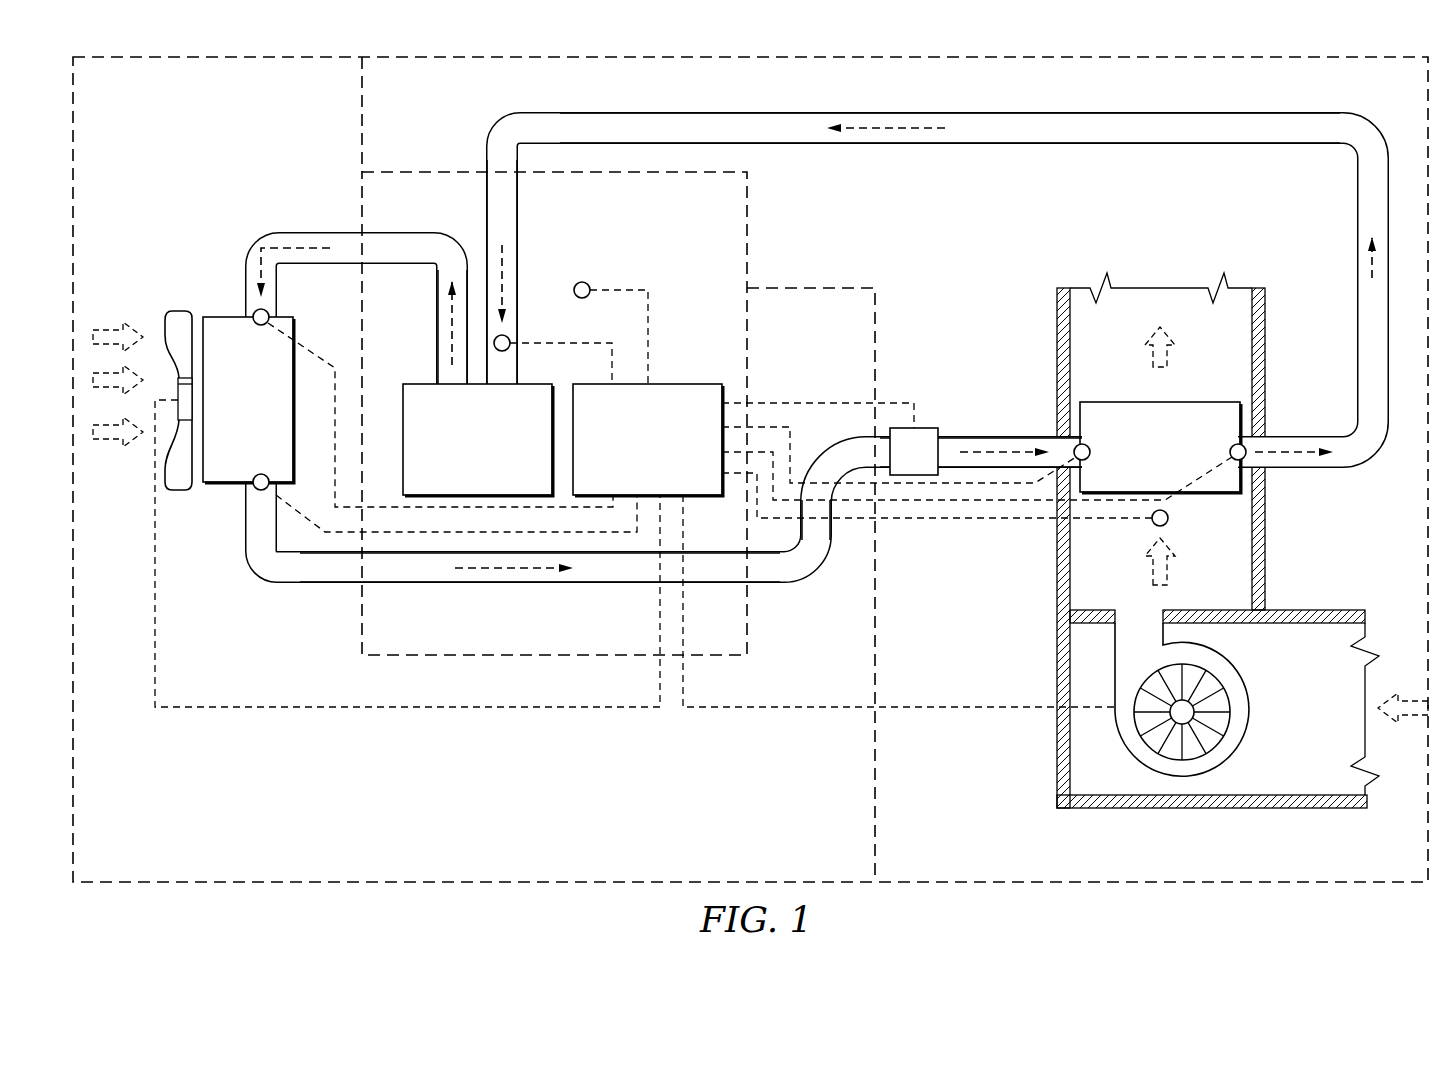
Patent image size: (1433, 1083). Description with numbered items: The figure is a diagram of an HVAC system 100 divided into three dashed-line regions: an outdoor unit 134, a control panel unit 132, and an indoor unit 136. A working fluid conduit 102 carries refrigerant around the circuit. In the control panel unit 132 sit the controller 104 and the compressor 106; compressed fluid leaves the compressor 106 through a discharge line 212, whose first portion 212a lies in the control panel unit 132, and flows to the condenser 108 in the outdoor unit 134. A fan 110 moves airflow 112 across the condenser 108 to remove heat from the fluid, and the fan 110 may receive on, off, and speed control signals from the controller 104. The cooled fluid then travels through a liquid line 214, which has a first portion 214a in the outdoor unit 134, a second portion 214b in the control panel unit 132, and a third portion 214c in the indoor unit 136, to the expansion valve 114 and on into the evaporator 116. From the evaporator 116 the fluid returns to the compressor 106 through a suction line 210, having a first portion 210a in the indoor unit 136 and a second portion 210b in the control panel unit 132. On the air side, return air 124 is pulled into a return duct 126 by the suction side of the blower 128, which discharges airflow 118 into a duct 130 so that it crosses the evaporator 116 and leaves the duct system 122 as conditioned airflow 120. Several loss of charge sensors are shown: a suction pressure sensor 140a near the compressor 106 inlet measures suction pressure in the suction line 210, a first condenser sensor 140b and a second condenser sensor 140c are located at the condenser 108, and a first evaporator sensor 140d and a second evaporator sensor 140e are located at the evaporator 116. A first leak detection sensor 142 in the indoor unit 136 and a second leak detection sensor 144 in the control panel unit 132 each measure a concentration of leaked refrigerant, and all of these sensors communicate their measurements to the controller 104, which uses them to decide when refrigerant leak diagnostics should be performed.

The HVAC system 100 is at (1258, 30).
The working fluid conduit 102 is at (762, 361).
The controller 104 is at (648, 440).
The compressor 106 is at (478, 440).
The condenser 108 is at (223, 316).
The fan 110 is at (188, 310).
The airflow 112 is at (106, 327).
The expansion valve 114 is at (914, 451).
The evaporator 116 is at (1160, 447).
The airflow 118 is at (1168, 568).
The conditioned airflow 120 is at (1168, 356).
The duct system 122 is at (1267, 340).
The return air 124 is at (1400, 722).
The return duct 126 is at (1300, 808).
The blower 128 is at (1240, 672).
The duct 130 is at (1266, 524).
The control panel unit 132 is at (555, 356).
The outdoor unit 134 is at (750, 469).
The indoor unit 136 is at (894, 585).
The suction pressure sensor 140a is at (511, 340).
The first condenser sensor 140b is at (270, 314).
The second condenser sensor 140c is at (253, 490).
The first evaporator sensor 140d is at (1074, 448).
The second evaporator sensor 140e is at (1245, 447).
The first leak detection sensor 142 is at (1169, 518).
The second leak detection sensor 144 is at (590, 285).
The suction line 210 is at (885, 282).
The first portion of the suction line 210a is at (1178, 144).
The second portion of the suction line 210b is at (487, 196).
The discharge line 212 is at (309, 294).
The first portion of the discharge line 212a is at (404, 266).
The liquid line 214 is at (623, 508).
The first portion of the liquid line 214a is at (318, 583).
The second portion of the liquid line 214b is at (713, 584).
The third portion of the liquid line 214c is at (955, 437).